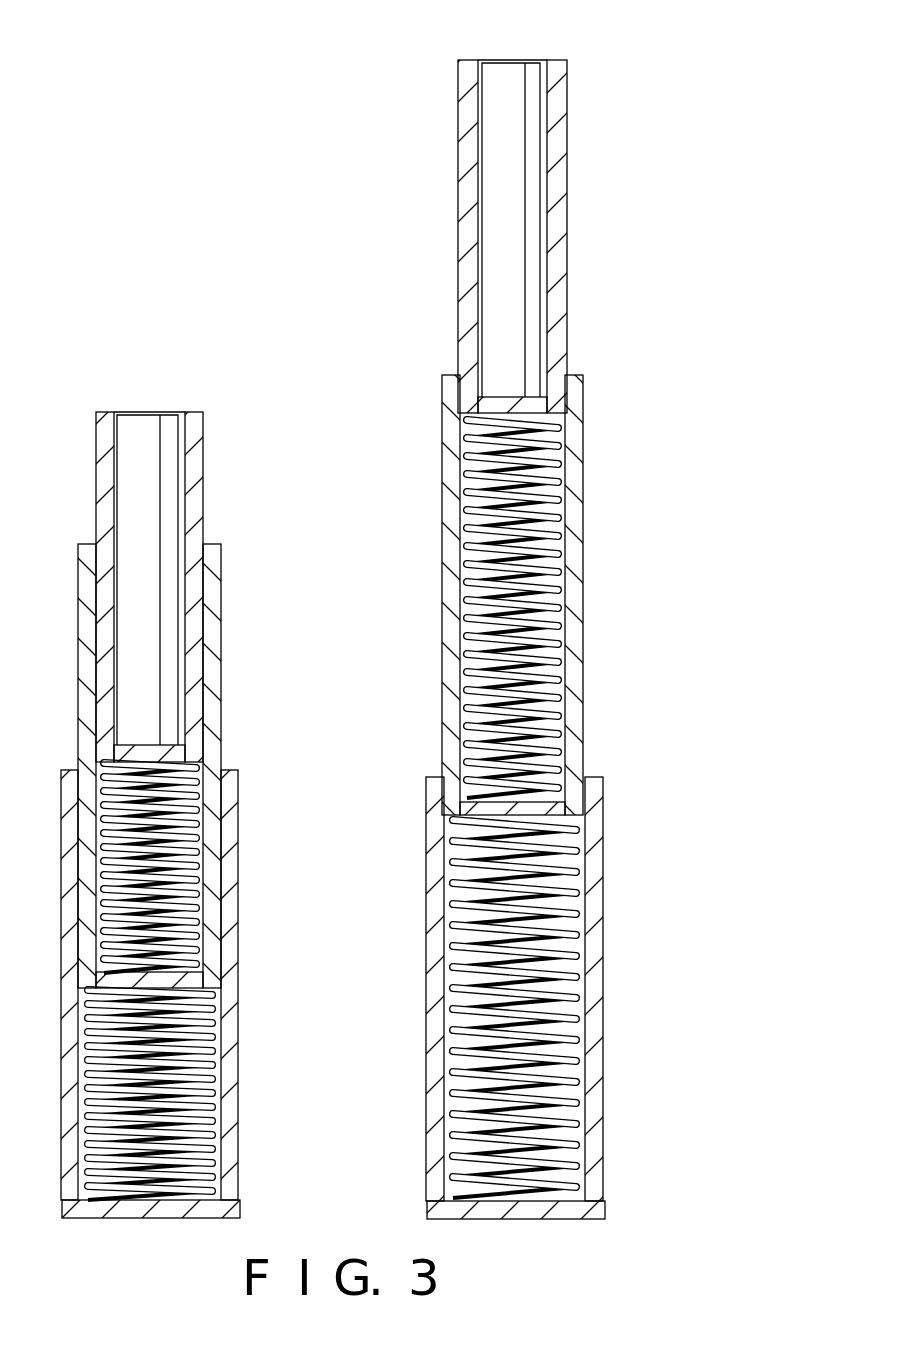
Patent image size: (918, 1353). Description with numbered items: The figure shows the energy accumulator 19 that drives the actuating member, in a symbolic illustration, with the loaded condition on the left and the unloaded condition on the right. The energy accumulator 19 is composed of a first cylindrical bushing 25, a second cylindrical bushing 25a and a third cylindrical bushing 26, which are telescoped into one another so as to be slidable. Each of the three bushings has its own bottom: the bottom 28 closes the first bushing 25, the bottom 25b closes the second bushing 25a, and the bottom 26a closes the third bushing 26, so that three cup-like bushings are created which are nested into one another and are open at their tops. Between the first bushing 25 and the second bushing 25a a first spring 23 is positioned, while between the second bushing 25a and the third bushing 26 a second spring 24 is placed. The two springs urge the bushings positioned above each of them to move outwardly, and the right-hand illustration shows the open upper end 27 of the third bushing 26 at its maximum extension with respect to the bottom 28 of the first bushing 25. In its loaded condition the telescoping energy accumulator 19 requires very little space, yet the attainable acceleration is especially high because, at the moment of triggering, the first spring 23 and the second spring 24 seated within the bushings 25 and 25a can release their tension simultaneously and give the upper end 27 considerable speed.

The energy accumulator 19 is at (334, 396).
The first spring 23 is at (203, 1096).
The second spring 24 is at (193, 850).
The first cylindrical bushing 25 is at (230, 934).
The second cylindrical bushing 25a is at (215, 598).
The bottom of second bushing 25b is at (190, 982).
The third cylindrical bushing 26 is at (192, 477).
The bottom of third bushing 26a is at (190, 752).
The open upper end of third bushing 27 is at (153, 411).
The bottom of first bushing 28 is at (223, 1207).